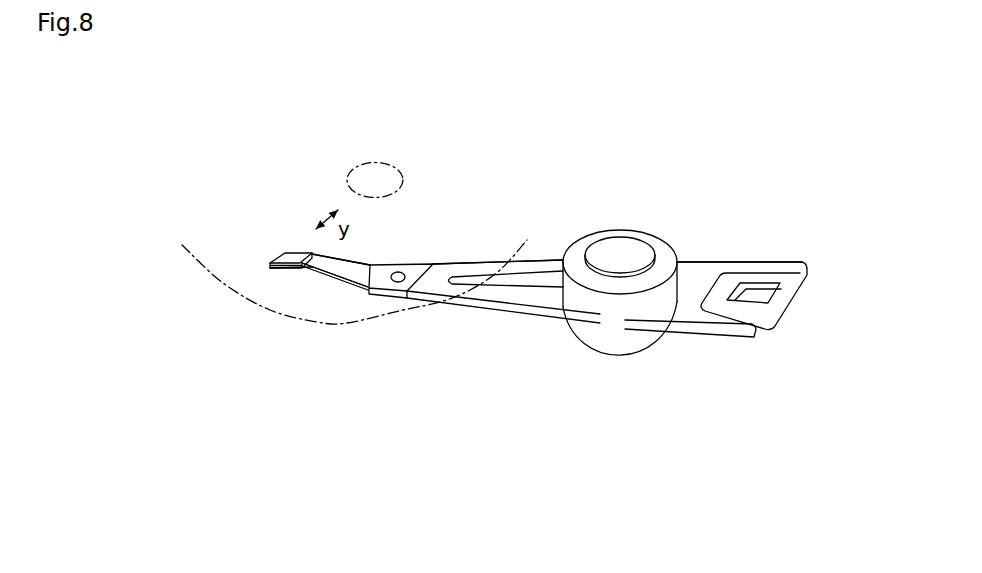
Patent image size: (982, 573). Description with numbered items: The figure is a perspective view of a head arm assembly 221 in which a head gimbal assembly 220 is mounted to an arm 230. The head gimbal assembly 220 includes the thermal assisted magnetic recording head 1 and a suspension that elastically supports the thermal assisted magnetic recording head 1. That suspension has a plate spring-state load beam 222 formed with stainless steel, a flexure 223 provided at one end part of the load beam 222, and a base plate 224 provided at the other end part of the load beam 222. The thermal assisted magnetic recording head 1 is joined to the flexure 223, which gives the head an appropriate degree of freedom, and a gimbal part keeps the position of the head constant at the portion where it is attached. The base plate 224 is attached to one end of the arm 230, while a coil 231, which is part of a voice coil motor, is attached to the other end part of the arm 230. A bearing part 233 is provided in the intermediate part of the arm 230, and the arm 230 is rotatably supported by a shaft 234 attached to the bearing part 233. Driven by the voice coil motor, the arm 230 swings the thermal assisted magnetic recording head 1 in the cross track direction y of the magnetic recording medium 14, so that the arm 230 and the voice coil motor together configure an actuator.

The thermal assisted magnetic recording head 1 is at (297, 257).
The magnetic recording medium 14 is at (300, 318).
The head gimbal assembly 220 is at (359, 300).
The head arm assembly 221 is at (521, 224).
The load beam 222 is at (376, 266).
The flexure 223 is at (277, 260).
The base plate 224 is at (421, 266).
The arm 230 is at (477, 304).
The coil 231 is at (798, 313).
The bearing part 233 is at (578, 245).
The shaft 234 is at (628, 247).